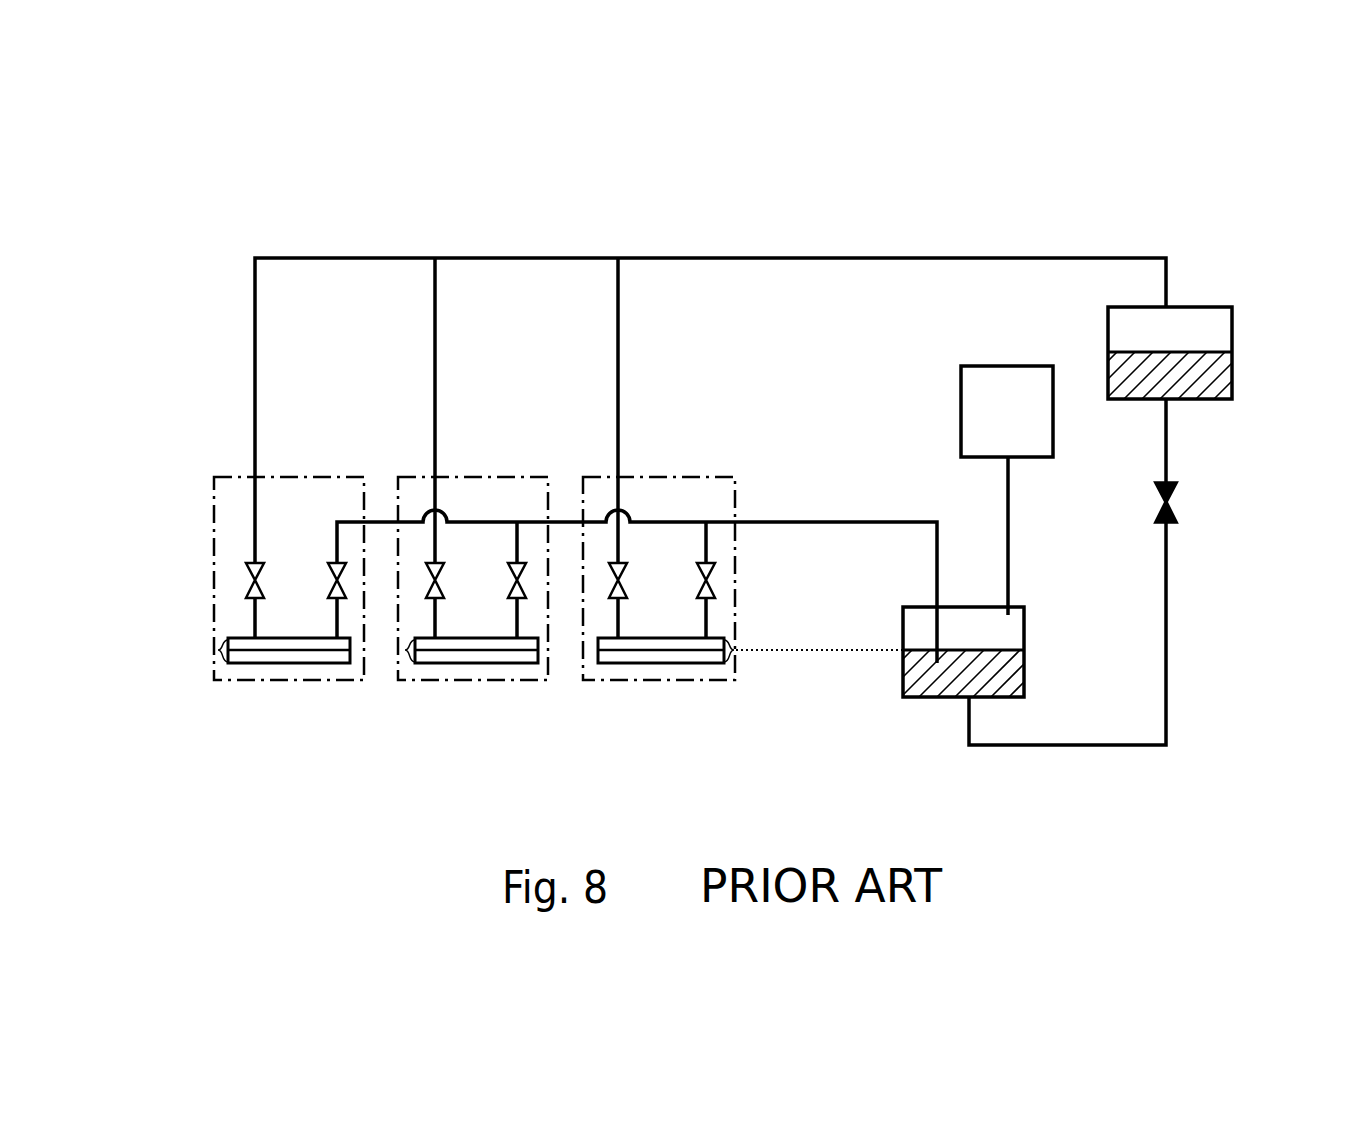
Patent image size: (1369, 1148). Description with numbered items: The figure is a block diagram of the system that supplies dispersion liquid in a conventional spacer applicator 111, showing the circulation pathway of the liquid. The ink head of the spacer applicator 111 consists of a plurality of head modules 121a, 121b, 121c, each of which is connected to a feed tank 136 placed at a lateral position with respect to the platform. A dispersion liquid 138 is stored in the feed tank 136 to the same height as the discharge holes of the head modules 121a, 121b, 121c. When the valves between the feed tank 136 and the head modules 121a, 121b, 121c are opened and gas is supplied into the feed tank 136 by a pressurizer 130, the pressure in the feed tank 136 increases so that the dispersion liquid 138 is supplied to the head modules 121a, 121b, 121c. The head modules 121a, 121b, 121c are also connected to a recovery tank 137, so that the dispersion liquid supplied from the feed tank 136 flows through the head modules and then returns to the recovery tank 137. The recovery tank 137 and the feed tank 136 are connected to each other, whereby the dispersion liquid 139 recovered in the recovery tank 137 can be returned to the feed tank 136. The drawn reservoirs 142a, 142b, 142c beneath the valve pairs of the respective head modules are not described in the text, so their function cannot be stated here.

The spacer applicator 111 is at (158, 136).
The head module 121a is at (280, 682).
The head module 121b is at (501, 682).
The head module 121c is at (646, 682).
The first processing liquid tank 142a is at (216, 652).
The second processing liquid tank 142b is at (405, 652).
The third processing liquid tank 142c is at (736, 650).
The pressurizer 130 is at (961, 382).
The feed tank 136 is at (1024, 634).
The recovery tank 137 is at (1232, 330).
The dispersion liquid 138 is at (921, 698).
The dispersion liquid 139 is at (1232, 368).